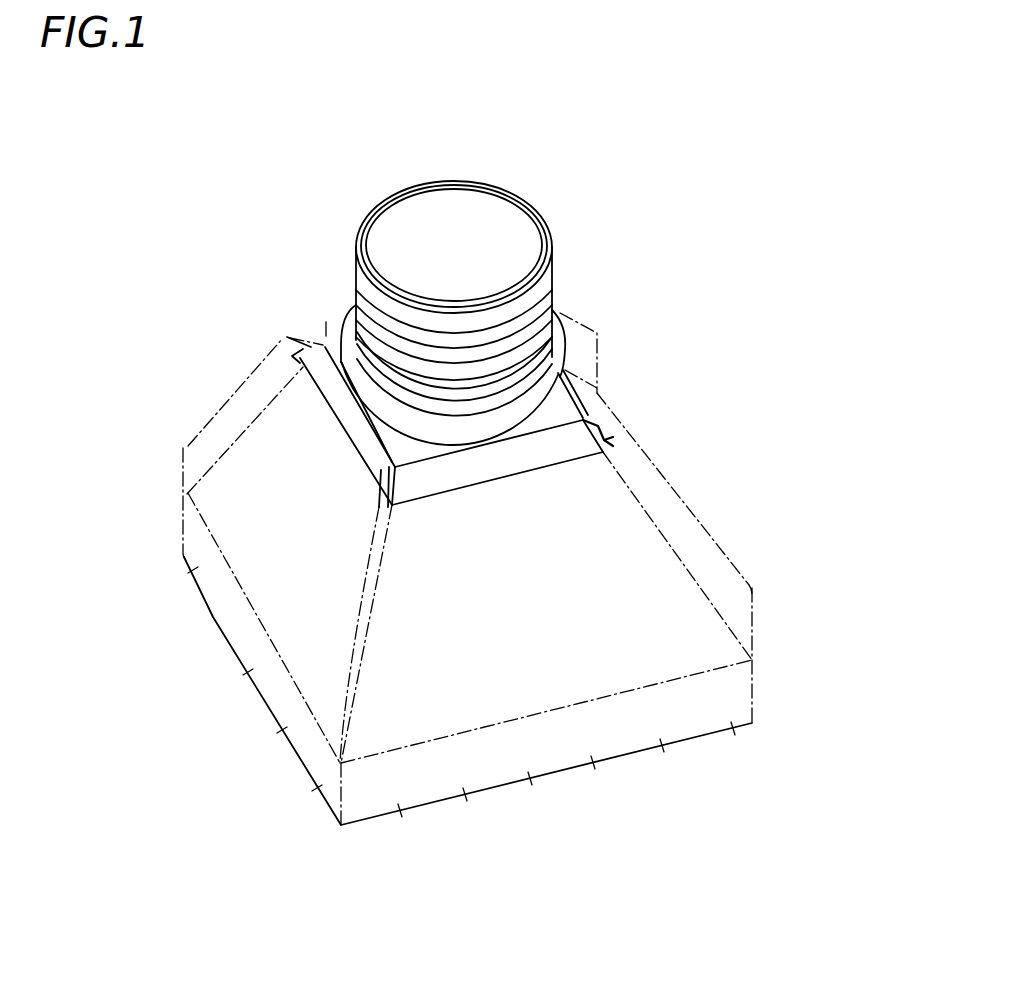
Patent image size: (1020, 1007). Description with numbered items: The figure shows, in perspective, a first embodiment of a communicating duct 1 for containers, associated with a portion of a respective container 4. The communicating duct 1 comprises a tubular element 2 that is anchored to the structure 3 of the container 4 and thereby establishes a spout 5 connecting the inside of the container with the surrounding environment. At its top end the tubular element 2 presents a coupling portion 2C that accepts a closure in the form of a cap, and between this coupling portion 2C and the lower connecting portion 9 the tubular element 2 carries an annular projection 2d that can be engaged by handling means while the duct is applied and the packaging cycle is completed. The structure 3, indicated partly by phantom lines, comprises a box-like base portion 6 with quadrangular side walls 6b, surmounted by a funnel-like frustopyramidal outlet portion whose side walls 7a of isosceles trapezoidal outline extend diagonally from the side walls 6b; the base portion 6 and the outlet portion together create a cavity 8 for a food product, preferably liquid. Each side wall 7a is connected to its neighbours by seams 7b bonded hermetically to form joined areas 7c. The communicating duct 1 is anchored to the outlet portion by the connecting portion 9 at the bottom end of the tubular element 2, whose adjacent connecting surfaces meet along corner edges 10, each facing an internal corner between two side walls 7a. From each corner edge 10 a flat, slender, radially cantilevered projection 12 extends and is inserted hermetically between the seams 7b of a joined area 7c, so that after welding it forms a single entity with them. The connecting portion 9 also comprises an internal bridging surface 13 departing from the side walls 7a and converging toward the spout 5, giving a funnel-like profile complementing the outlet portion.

The communicating duct 1 is at (522, 170).
The tubular element 2 is at (572, 273).
The coupling portion 2C is at (558, 217).
The annular projection 2d is at (557, 343).
The structure 3 is at (749, 538).
The container 4 is at (759, 692).
The spout 5 is at (475, 212).
The base portion 6 is at (713, 705).
The side wall 6b is at (203, 565).
The side wall 7a is at (250, 488).
The seam 7b is at (185, 446).
The joined area 7c is at (245, 368).
The cavity 8 is at (667, 725).
The connecting portion 9 is at (489, 466).
The corner edge 10 is at (326, 344).
The projection 12 is at (287, 337).
The internal bridging surface 13 is at (333, 400).